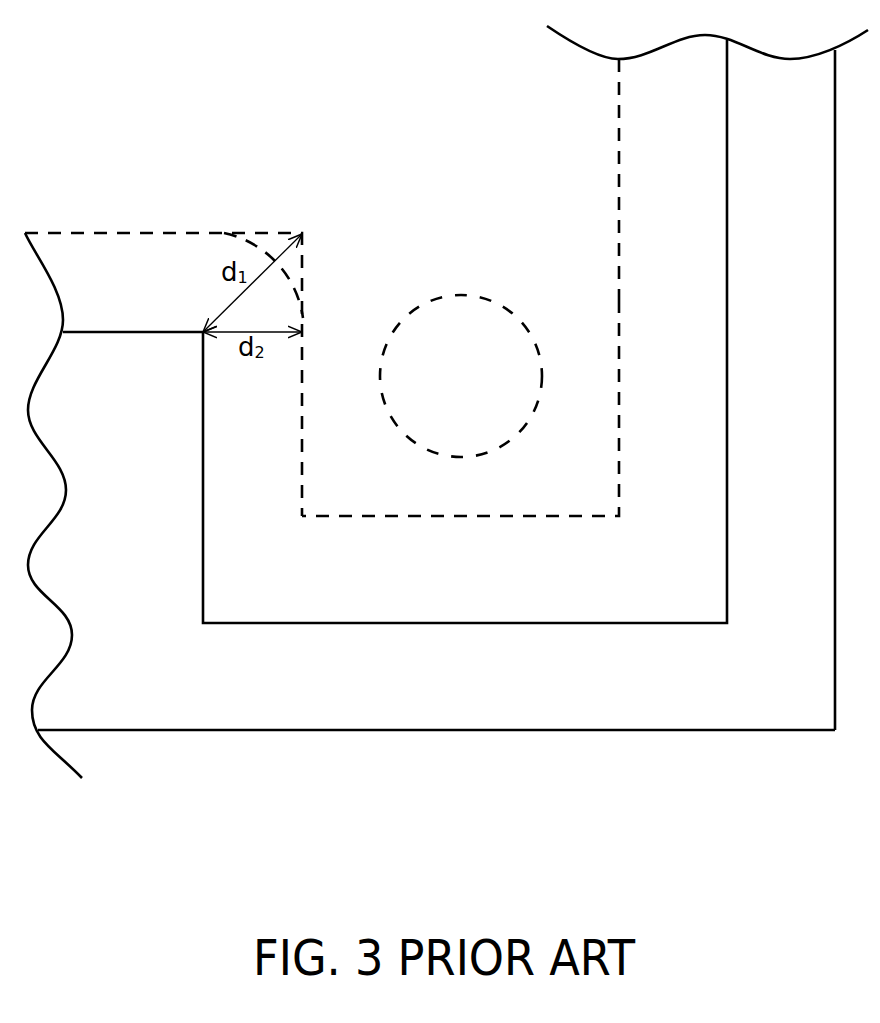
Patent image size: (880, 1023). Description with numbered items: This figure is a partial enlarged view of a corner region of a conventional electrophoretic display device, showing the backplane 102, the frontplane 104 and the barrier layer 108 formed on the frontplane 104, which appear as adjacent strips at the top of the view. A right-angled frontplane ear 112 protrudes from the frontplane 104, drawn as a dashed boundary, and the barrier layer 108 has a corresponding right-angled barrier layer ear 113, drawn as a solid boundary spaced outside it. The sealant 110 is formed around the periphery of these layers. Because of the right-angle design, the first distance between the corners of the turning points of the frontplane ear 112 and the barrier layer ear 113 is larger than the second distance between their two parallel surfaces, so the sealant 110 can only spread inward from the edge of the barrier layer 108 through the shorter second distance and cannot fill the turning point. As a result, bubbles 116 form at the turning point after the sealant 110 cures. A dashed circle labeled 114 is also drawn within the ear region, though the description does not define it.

The backplane 102 is at (808, 109).
The frontplane 104 is at (600, 109).
The barrier layer 108 is at (697, 109).
The sealant 110 is at (326, 694).
The frontplane ear 112 is at (608, 526).
The barrier layer ear 113 is at (717, 637).
The contact 114 is at (445, 296).
The bubbles 116 is at (257, 233).